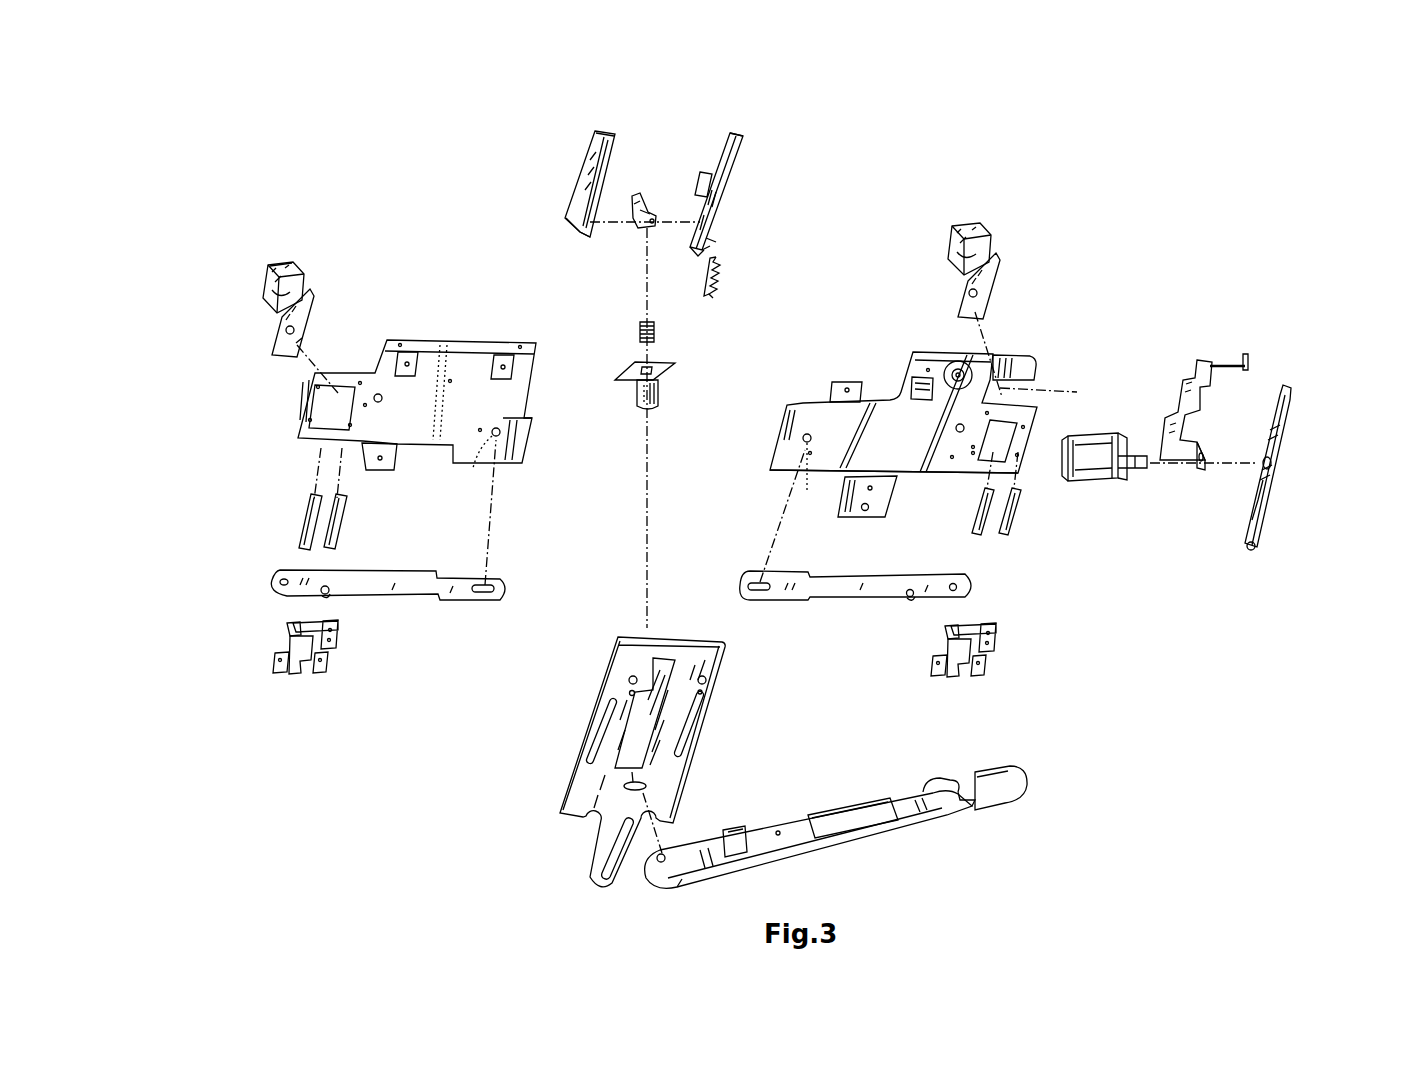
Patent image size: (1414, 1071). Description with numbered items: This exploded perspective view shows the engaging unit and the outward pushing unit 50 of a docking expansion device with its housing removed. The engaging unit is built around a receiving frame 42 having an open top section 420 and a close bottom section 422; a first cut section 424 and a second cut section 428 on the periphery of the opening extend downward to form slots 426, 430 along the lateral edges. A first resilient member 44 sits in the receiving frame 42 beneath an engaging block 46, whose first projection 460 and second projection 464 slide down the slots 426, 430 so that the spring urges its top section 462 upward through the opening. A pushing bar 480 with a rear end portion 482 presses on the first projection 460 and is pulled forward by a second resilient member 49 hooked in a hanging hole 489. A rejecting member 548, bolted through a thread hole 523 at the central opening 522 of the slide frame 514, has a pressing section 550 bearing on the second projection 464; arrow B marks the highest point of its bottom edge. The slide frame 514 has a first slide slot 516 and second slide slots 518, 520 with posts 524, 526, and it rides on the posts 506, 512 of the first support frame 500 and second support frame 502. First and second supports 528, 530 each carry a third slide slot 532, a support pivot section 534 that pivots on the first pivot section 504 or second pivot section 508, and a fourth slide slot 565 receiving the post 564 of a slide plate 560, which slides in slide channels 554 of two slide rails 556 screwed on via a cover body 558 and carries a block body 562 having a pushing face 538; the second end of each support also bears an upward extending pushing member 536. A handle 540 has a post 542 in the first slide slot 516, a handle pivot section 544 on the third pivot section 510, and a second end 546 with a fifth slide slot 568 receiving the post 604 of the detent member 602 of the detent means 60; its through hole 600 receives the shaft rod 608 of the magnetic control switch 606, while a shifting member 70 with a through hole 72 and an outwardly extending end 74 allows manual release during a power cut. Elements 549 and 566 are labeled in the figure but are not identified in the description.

The pushing member 536 is at (604, 282).
The pushing face 538 is at (262, 306).
The slide plate 560 is at (296, 317).
The block body 562 is at (280, 266).
The post 564 is at (303, 342).
The clip aperture 566 is at (282, 332).
The first support frame 500 is at (400, 445).
The first pivot section 504 is at (384, 400).
The post 506 is at (474, 468).
The slide channels 554 is at (321, 505).
The slide rails 556 is at (302, 532).
The first support 528 is at (618, 549).
The fourth slide slot 565 is at (270, 582).
The support pivot section 534 is at (335, 593).
The third slide slot 532 is at (493, 577).
The cover body 558 is at (297, 670).
The arrow B is at (561, 169).
The rejecting member 548 is at (578, 178).
The plate top edge 549 is at (598, 142).
The pressing section 550 is at (585, 232).
The engaging block 46 is at (601, 216).
The top section 462 is at (640, 200).
The first projection 460 is at (652, 218).
The second projection 464 is at (633, 223).
The pushing bar 480 is at (734, 185).
The rear end portion 482 is at (732, 140).
The hanging hole 489 is at (722, 244).
The second resilient member 49 is at (720, 282).
The first resilient member 44 is at (638, 329).
The open top section 420 is at (647, 386).
The first cut section 424 is at (668, 366).
The second cut section 428 is at (622, 372).
The close bottom section 422 is at (648, 410).
The slot 426 is at (660, 392).
The slot 430 is at (637, 392).
The outward pushing unit 50 is at (914, 494).
The receiving frame 42 is at (772, 366).
The second support frame 502 is at (800, 475).
The post 512 is at (847, 479).
The second pivot section 508 is at (958, 431).
The third pivot section 510 is at (870, 508).
The second support 530 is at (815, 600).
The detent means 60 is at (1232, 487).
The magnetic control switch 606 is at (1126, 449).
The shaft rod 608 is at (1148, 462).
The shifting member 70 is at (1213, 444).
The through hole 72 is at (1207, 463).
The end 74 is at (1250, 365).
The detent member 602 is at (1316, 505).
The through hole 600 is at (1272, 470).
The post 604 is at (1253, 551).
The slide frame 514 is at (637, 760).
The second slide slot 518 is at (597, 727).
The second slide slot 520 is at (700, 730).
The opening 522 is at (625, 765).
The thread hole 523 is at (628, 691).
The post 524 is at (628, 680).
The post 526 is at (712, 683).
The first slide slot 516 is at (624, 786).
The handle 540 is at (838, 821).
The post 542 is at (667, 860).
The handle pivot section 544 is at (778, 835).
The second end 546 is at (1002, 798).
The fifth slide slot 568 is at (940, 778).